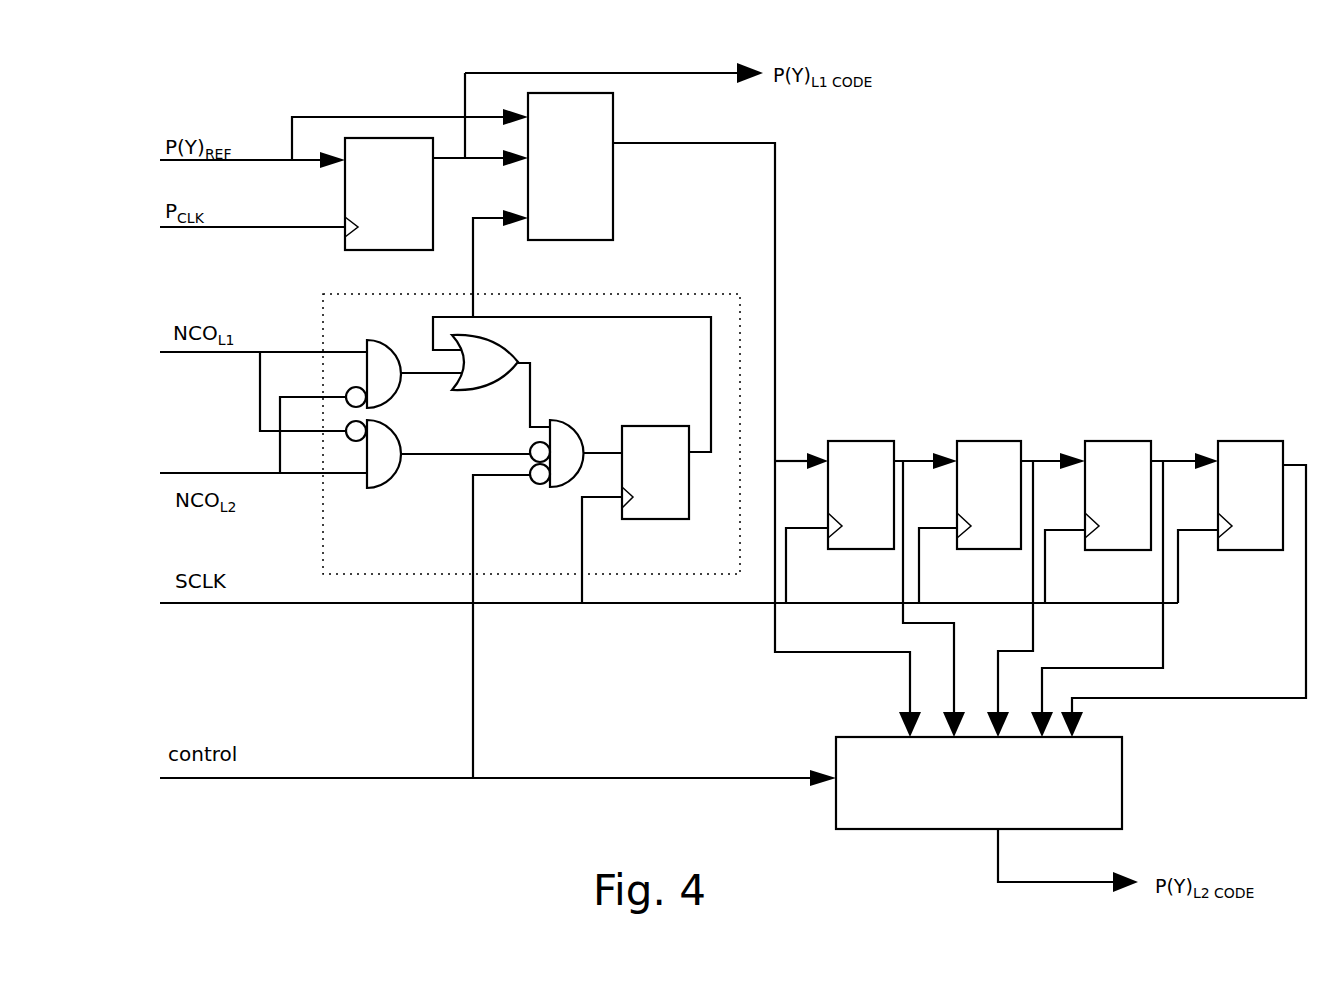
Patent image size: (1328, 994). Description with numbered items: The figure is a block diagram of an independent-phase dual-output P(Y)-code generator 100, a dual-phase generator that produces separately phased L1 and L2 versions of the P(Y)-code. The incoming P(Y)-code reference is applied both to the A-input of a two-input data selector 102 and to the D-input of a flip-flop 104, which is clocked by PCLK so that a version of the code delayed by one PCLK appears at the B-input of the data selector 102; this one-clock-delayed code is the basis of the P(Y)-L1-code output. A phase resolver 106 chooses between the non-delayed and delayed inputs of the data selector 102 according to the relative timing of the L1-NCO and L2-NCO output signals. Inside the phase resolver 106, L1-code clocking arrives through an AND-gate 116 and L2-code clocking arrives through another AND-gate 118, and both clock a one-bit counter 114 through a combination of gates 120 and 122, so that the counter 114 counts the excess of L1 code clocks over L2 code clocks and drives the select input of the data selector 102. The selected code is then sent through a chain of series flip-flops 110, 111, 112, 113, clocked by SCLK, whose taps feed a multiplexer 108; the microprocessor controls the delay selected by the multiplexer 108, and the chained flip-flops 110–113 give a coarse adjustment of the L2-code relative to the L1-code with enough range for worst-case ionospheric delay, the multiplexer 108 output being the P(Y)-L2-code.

The independent-phase dual-output P(Y)-code generator 100 is at (250, 60).
The two-input data selector 102 is at (615, 168).
The flip-flop 104 is at (362, 250).
The phase resolver 106 is at (650, 295).
The multiplexer 108 is at (835, 820).
The flip-flop 110 is at (840, 441).
The flip-flop 111 is at (963, 441).
The flip-flop 112 is at (1093, 441).
The flip-flop 113 is at (1225, 441).
The one-bit counter 114 is at (633, 426).
The AND-gate 116 is at (402, 390).
The AND-gate 118 is at (402, 470).
The gate 120 is at (505, 343).
The gate 122 is at (582, 433).